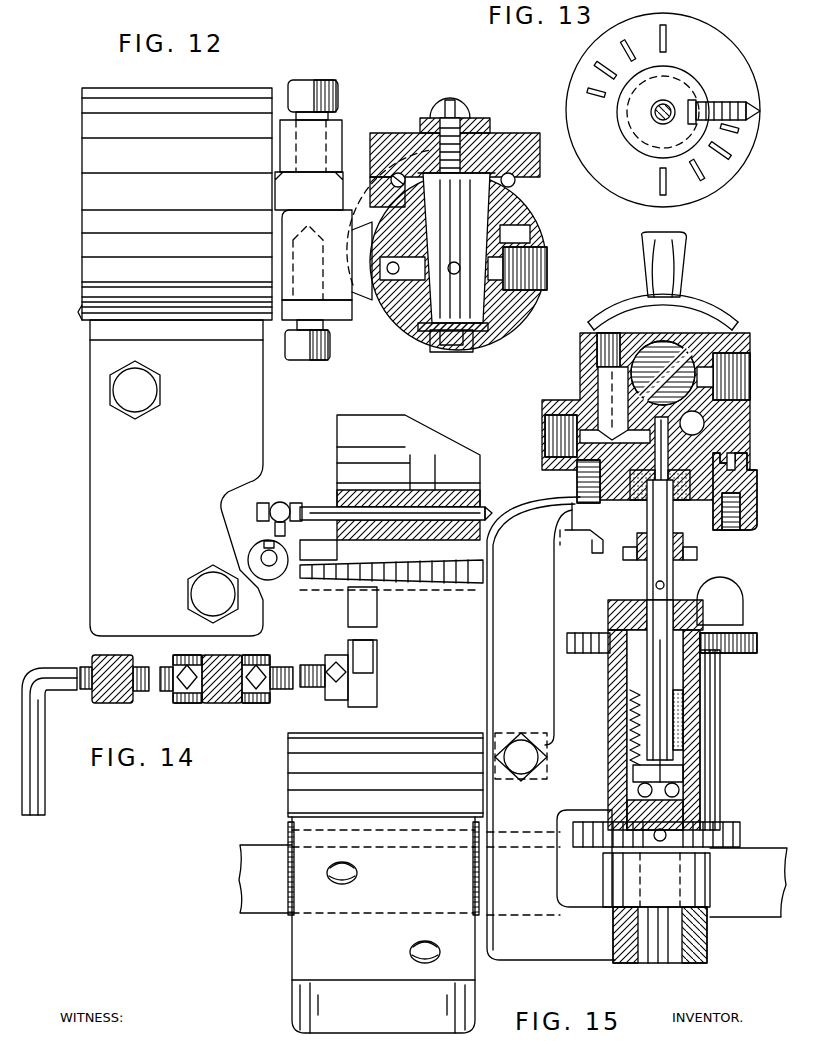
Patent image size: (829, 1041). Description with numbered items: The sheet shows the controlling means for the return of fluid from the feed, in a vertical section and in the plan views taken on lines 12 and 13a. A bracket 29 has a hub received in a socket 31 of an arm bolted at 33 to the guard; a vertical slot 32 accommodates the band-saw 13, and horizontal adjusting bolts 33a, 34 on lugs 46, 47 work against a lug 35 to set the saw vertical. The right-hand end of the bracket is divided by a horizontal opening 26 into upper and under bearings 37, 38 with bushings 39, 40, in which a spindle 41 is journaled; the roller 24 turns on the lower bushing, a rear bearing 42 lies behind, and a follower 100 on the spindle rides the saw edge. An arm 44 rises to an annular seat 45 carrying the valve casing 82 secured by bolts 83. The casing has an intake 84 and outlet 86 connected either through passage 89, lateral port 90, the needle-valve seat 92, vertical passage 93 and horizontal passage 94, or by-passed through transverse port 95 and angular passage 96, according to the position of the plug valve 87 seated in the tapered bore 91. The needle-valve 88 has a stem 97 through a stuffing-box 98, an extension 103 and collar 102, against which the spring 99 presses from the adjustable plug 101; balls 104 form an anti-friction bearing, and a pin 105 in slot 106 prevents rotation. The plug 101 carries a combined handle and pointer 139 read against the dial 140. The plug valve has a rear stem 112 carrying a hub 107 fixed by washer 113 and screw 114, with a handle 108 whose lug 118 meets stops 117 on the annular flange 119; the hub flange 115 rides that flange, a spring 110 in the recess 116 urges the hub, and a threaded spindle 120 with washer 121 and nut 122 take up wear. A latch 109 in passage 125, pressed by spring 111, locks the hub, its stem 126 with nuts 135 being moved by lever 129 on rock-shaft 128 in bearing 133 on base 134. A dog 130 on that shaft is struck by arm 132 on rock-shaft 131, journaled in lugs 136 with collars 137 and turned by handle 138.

In FIG. 12, the section lines 12 is at (520, 372).
In FIG. 15, the section lines 12 is at (745, 375).
In FIG. 15, the band-saw 13 is at (513, 881).
In FIG. 15, the section lines 13a is at (775, 570).
In FIG. 15, the roller 24 is at (656, 880).
In FIG. 15, the horizontal opening 26 is at (560, 820).
In FIG. 12, the bracket 29 is at (287, 263).
In FIG. 15, the bracket 29 is at (574, 747).
In FIG. 12, the socket 31 is at (175, 204).
In FIG. 15, the socket 31 is at (388, 745).
In FIG. 12, the vertical slot 32 is at (176, 478).
In FIG. 15, the vertical slot 32 is at (383, 925).
In FIG. 12, the bolts 33 is at (150, 402).
In FIG. 12, the adjusting bolt 33a is at (325, 70).
In FIG. 12, the adjusting bolt 34 is at (297, 362).
In FIG. 15, the adjusting bolt 34 is at (535, 770).
In FIG. 12, the lug 35 is at (306, 174).
In FIG. 15, the lug 35 is at (558, 730).
In FIG. 15, the upper bearing 37 is at (700, 740).
In FIG. 15, the under bearing 38 is at (708, 944).
In FIG. 15, the bushing 39 is at (705, 780).
In FIG. 15, the bushing 40 is at (638, 963).
In FIG. 15, the spindle 41 is at (670, 963).
In FIG. 12, the vertical bearing 42 is at (384, 96).
In FIG. 12, the arm 44 is at (288, 313).
In FIG. 15, the arm 44 is at (551, 728).
In FIG. 15, the annular seat 45 is at (757, 514).
In FIG. 12, the lug 46 is at (284, 152).
In FIG. 12, the lug 47 is at (285, 229).
In FIG. 12, the valve casing 82 is at (490, 306).
In FIG. 15, the valve casing 82 is at (670, 452).
In FIG. 15, the bolts 83 is at (748, 463).
In FIG. 12, the intake 84 is at (547, 270).
In FIG. 15, the intake 84 is at (752, 362).
In FIG. 12, the outlet 86 is at (345, 322).
In FIG. 15, the outlet 86 is at (548, 440).
In FIG. 12, the plug valve 87 is at (456, 241).
In FIG. 15, the plug valve 87 is at (690, 310).
In FIG. 12, the needle-valve 88 is at (456, 248).
In FIG. 15, the needle-valve 88 is at (704, 425).
In FIG. 15, the horizontal passage 89 is at (712, 378).
In FIG. 15, the lateral port 90 is at (715, 340).
In FIG. 12, the tapered bore 91 is at (428, 228).
In FIG. 15, the tapered bore 91 is at (640, 318).
In FIG. 15, the needle-valve seat 92 is at (577, 488).
In FIG. 15, the vertical passage 93 is at (588, 503).
In FIG. 15, the horizontal passage 94 is at (560, 483).
In FIG. 12, the transverse port 95 is at (455, 262).
In FIG. 15, the transverse port 95 is at (670, 360).
In FIG. 12, the angular passage 96 is at (395, 292).
In FIG. 15, the angular passage 96 is at (600, 380).
In FIG. 13, the stem 97 is at (660, 122).
In FIG. 15, the stem 97 is at (686, 540).
In FIG. 15, the stuffing-box 98 is at (685, 553).
In FIG. 15, the spring 99 is at (690, 700).
In FIG. 15, the follower 100 is at (742, 832).
In FIG. 13, the adjustable plug 101 is at (618, 112).
In FIG. 15, the adjustable plug 101 is at (620, 635).
In FIG. 15, the collar 102 is at (630, 742).
In FIG. 13, the extension 103 is at (650, 118).
In FIG. 15, the extension 103 is at (722, 664).
In FIG. 15, the balls 104 is at (700, 760).
In FIG. 15, the pin 105 is at (718, 715).
In FIG. 15, the vertical slot 106 is at (718, 675).
In FIG. 12, the hub 107 is at (506, 132).
In FIG. 15, the handle 108 is at (676, 238).
In FIG. 12, the latch 109 is at (435, 584).
In FIG. 12, the spring 110 is at (516, 184).
In FIG. 12, the spring 111 is at (392, 584).
In FIG. 12, the stem 112 is at (498, 125).
In FIG. 12, the washer 113 is at (436, 125).
In FIG. 12, the screw 114 is at (440, 117).
In FIG. 12, the flange 115 is at (520, 190).
In FIG. 15, the flange 115 is at (605, 320).
In FIG. 12, the annular recess 116 is at (526, 202).
In FIG. 15, the stops 117 is at (735, 310).
In FIG. 15, the lug 118 is at (672, 290).
In FIG. 12, the annular flange 119 is at (515, 233).
In FIG. 15, the annular flange 119 is at (718, 290).
In FIG. 12, the screw-threaded spindle 120 is at (425, 335).
In FIG. 12, the washer 121 is at (412, 330).
In FIG. 12, the nut 122 is at (456, 356).
In FIG. 12, the horizontal passage 125 is at (420, 584).
In FIG. 15, the horizontal passage 125 is at (700, 420).
In FIG. 12, the stem 126 is at (488, 329).
In FIG. 12, the rock-shaft 128 is at (272, 581).
In FIG. 12, the lever 129 is at (281, 502).
In FIG. 12, the dog 130 is at (330, 592).
In FIG. 12, the rock-shaft 131 is at (320, 690).
In FIG. 14, the rock-shaft 131 is at (80, 690).
In FIG. 12, the arm 132 is at (378, 648).
In FIG. 12, the bearing 133 is at (270, 537).
In FIG. 12, the base 134 is at (465, 584).
In FIG. 12, the nuts 135 is at (482, 345).
In FIG. 14, the lugs 136 is at (118, 703).
In FIG. 14, the collars 137 is at (190, 703).
In FIG. 14, the handle 138 is at (47, 786).
In FIG. 13, the combined handle and pointer 139 is at (757, 108).
In FIG. 15, the combined handle and pointer 139 is at (745, 608).
In FIG. 13, the dial 140 is at (735, 70).
In FIG. 15, the dial 140 is at (740, 635).